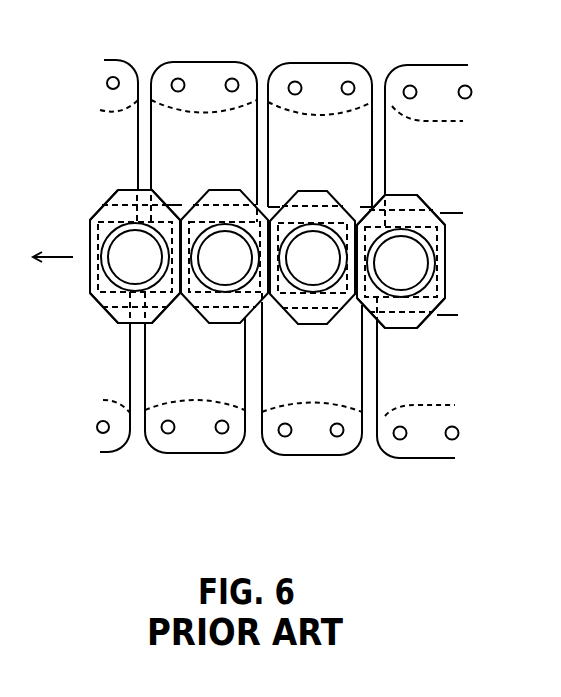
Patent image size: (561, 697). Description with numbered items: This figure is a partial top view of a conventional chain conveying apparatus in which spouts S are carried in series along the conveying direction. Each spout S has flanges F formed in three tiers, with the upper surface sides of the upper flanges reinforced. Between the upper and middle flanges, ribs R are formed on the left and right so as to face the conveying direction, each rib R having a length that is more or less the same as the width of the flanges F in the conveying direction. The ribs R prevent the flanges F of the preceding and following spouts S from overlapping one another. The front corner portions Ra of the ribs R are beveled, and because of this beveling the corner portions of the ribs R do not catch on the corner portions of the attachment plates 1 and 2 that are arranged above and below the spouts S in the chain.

The attachment plate 1 is at (195, 385).
The attachment plate 2 is at (202, 135).
The spout S is at (88, 296).
The flange F is at (120, 193).
The rib R is at (403, 217).
The front corner portion of rib Ra is at (367, 213).